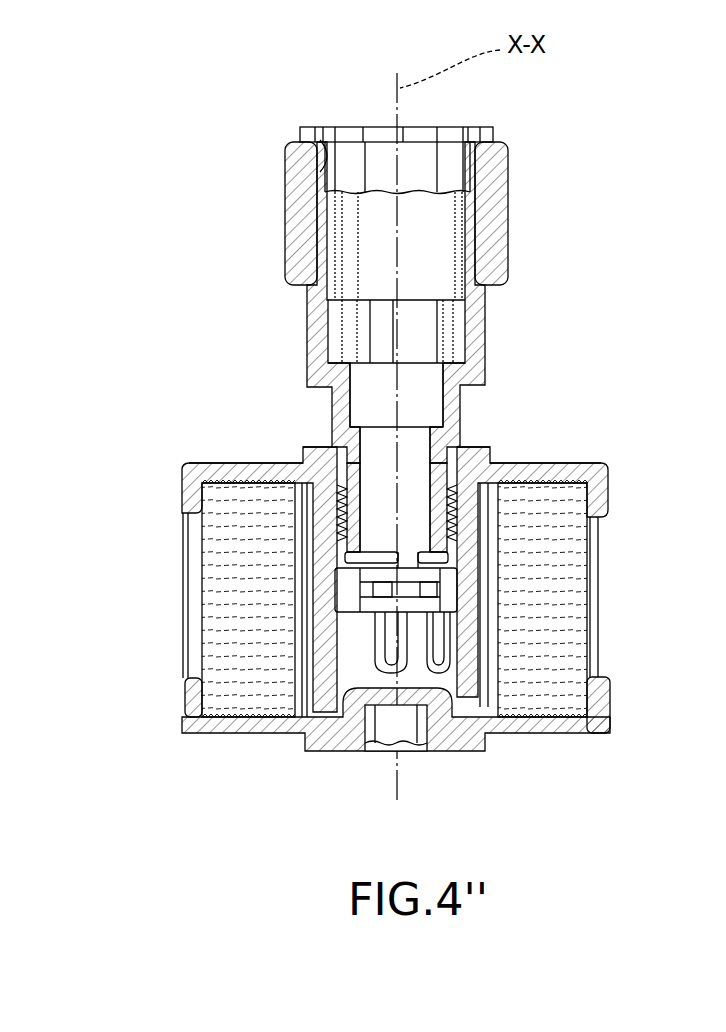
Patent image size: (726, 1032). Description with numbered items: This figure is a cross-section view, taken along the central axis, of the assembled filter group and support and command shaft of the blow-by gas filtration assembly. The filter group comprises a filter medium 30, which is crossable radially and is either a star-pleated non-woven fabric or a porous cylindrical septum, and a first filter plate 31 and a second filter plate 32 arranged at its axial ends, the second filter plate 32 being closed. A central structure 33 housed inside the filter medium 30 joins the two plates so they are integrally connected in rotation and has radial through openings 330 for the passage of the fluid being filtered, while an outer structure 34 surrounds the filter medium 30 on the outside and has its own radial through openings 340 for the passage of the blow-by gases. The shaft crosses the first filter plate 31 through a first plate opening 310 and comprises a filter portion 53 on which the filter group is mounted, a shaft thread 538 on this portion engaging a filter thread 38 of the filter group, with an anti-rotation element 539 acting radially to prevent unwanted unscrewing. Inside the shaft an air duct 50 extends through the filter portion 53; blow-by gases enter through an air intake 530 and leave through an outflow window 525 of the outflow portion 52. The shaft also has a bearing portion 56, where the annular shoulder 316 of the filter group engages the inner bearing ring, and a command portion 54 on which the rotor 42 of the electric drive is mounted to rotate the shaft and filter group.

The command portion 54 is at (323, 128).
The rotor 42 is at (297, 188).
The outflow portion 52 is at (307, 330).
The outflow window 525 is at (383, 340).
The bearing portion 56 is at (450, 412).
The filter portion 53 is at (332, 446).
The air duct 50 is at (380, 458).
The first plate opening 310 is at (333, 457).
The annular shoulder 316 is at (473, 453).
The first filter plate 31 is at (547, 462).
The shaft thread 538 is at (340, 505).
The filter thread 38 is at (452, 513).
The filter medium 30 is at (545, 548).
The radial through openings 340 is at (597, 620).
The outer structure 34 is at (595, 700).
The second filter plate 32 is at (538, 725).
The anti-rotation element 539 is at (363, 607).
The central structure 33 is at (315, 710).
The radial through openings 330 is at (390, 653).
The air intake 530 is at (412, 606).